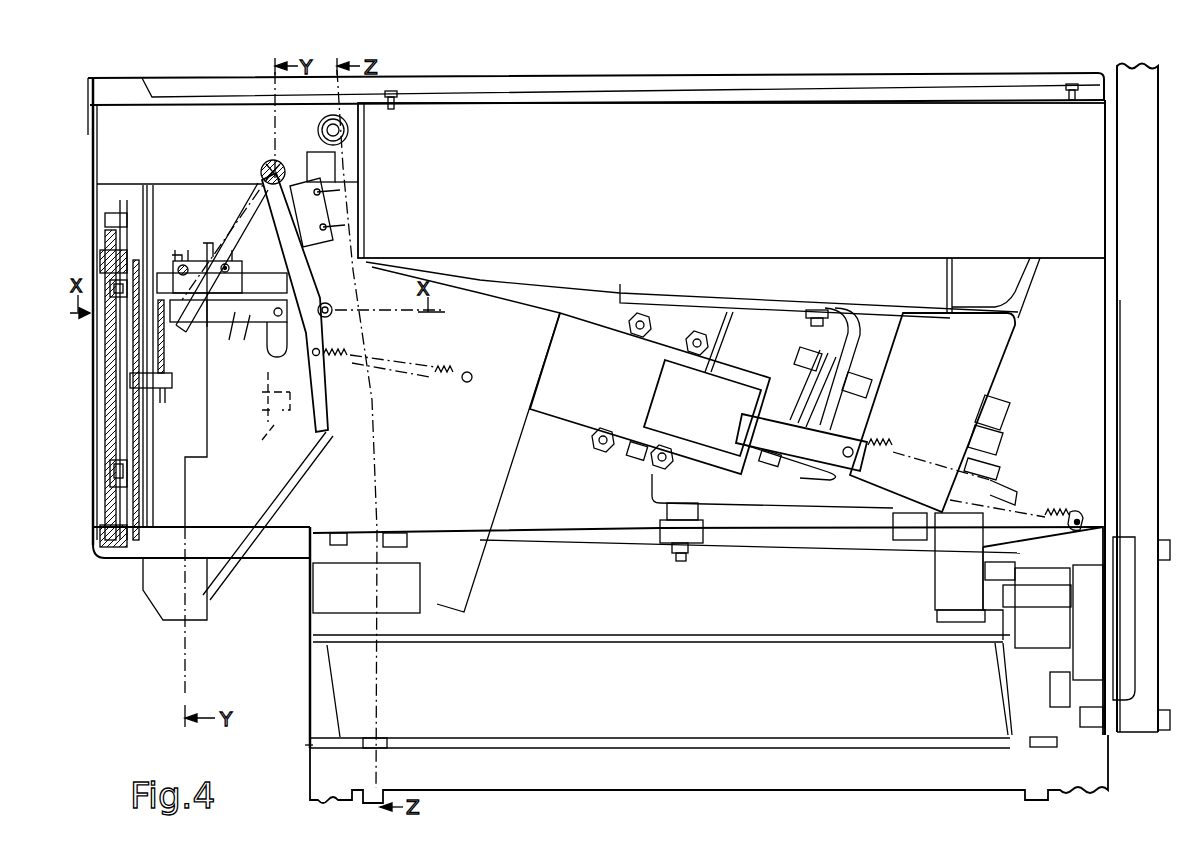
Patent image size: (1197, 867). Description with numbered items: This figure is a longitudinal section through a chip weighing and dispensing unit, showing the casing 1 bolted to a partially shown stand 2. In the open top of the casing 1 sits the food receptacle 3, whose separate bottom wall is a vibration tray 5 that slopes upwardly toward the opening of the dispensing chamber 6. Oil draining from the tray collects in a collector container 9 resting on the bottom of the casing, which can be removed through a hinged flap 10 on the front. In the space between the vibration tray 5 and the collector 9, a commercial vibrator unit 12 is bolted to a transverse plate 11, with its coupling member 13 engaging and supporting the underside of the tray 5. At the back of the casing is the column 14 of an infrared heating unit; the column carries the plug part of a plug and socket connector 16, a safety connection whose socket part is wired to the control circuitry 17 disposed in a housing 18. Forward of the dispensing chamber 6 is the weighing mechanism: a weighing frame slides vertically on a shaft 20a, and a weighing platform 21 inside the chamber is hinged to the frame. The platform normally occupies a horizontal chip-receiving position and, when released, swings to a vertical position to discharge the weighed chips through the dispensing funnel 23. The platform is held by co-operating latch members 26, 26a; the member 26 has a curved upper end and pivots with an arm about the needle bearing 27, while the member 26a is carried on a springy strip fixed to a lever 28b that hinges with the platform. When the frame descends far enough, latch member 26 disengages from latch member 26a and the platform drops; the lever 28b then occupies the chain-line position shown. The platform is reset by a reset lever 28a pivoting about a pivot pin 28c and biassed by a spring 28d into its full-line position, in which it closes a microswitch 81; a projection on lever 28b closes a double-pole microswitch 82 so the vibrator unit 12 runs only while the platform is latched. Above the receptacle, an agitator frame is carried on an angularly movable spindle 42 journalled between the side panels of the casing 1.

The casing 1 is at (1125, 357).
The stand 2 is at (1100, 783).
The food receptacle 3 is at (985, 199).
The vibration tray 5 is at (868, 305).
The dispensing chamber 6 is at (197, 224).
The collector container 9 is at (693, 702).
The hinged flap 10 is at (305, 722).
The transverse plate 11 is at (800, 545).
The vibrator unit 12 is at (945, 396).
The coupling member 13 is at (772, 310).
The column 14 is at (1145, 455).
The plug and socket connector 16 is at (1112, 735).
The control circuitry 17 is at (1093, 620).
The housing 18 is at (1040, 512).
The shaft 20a is at (120, 420).
The weighing platform 21 is at (260, 322).
The dispensing funnel 23 is at (207, 598).
The latch member 26 is at (165, 350).
The latch member 26a is at (251, 451).
The needle bearing 27 is at (162, 404).
The reset lever 28a is at (300, 268).
The lever 28b is at (266, 398).
The pivot pin 28c is at (266, 164).
The spring 28d is at (445, 362).
The spindle 42 is at (348, 130).
The microswitch 81 is at (340, 210).
The microswitch 82 is at (200, 258).